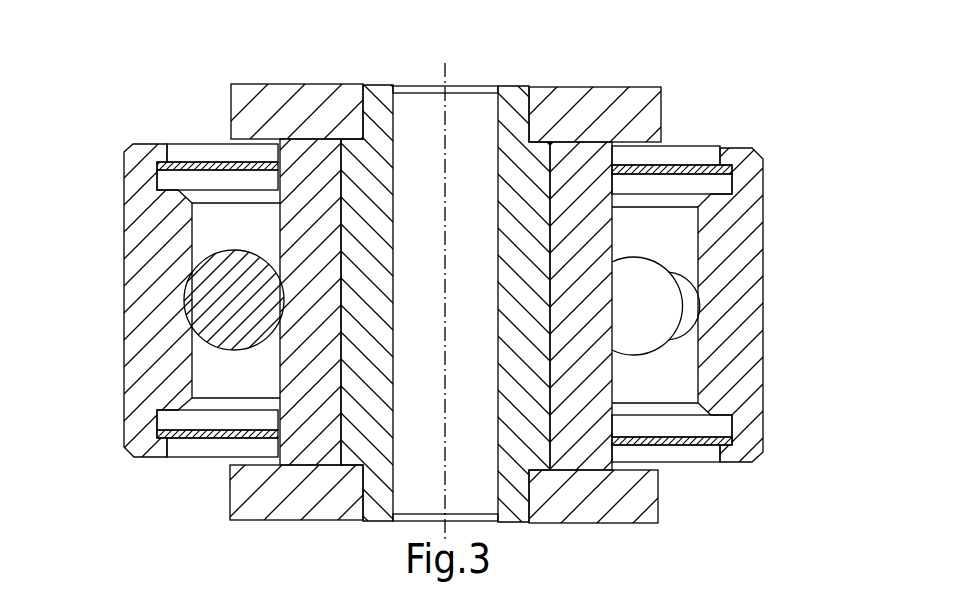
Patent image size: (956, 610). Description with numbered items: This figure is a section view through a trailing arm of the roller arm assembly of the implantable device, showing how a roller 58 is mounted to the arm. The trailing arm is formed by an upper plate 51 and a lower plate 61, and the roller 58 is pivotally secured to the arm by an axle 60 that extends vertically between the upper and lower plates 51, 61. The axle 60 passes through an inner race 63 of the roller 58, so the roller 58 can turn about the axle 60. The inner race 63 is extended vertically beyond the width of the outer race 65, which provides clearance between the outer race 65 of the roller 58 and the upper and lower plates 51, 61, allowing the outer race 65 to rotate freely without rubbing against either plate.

The upper plate 51 is at (603, 103).
The roller 58 is at (142, 296).
The axle 60 is at (372, 100).
The lower plate 61 is at (623, 515).
The inner race 63 is at (582, 213).
The outer race 65 is at (715, 405).